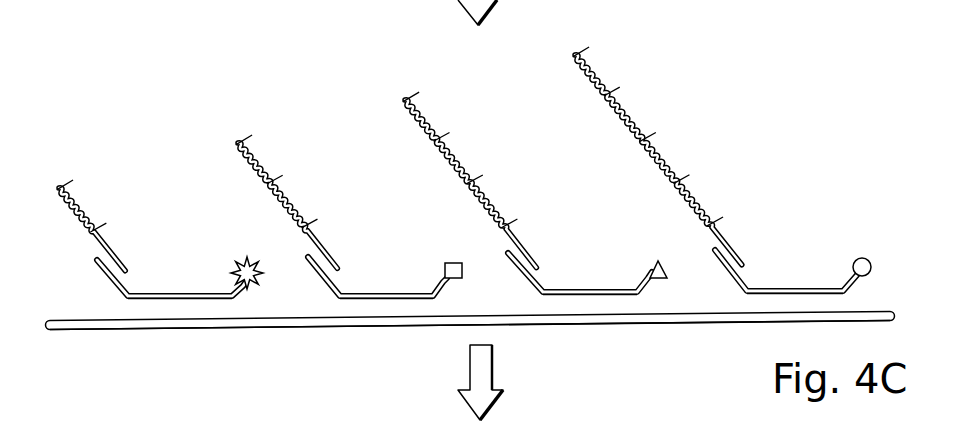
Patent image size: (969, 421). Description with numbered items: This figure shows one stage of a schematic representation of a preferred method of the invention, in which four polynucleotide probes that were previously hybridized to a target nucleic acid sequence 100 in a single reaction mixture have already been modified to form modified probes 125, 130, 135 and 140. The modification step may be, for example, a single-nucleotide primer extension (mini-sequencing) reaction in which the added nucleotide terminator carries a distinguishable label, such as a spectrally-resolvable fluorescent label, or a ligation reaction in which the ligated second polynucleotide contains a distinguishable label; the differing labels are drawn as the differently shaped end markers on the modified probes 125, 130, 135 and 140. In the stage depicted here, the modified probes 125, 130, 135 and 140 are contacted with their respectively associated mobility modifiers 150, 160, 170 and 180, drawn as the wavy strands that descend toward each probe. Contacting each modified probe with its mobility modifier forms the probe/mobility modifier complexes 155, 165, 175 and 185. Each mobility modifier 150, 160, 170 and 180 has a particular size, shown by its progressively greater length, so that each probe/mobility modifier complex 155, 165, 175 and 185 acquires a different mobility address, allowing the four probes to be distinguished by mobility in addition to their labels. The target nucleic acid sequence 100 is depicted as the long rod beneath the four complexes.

The target nucleic acid sequence 100 is at (650, 330).
The modified probe 125 is at (163, 293).
The modified probe 130 is at (372, 292).
The modified probe 135 is at (577, 287).
The modified probe 140 is at (782, 285).
The mobility modifier 150 is at (78, 202).
The probe/mobility modifier complex 155 is at (142, 202).
The mobility modifier 160 is at (262, 163).
The probe/mobility modifier complex 165 is at (343, 198).
The mobility modifier 170 is at (435, 130).
The probe/mobility modifier complex 175 is at (547, 180).
The mobility modifier 180 is at (603, 78).
The probe/mobility modifier complex 185 is at (728, 142).